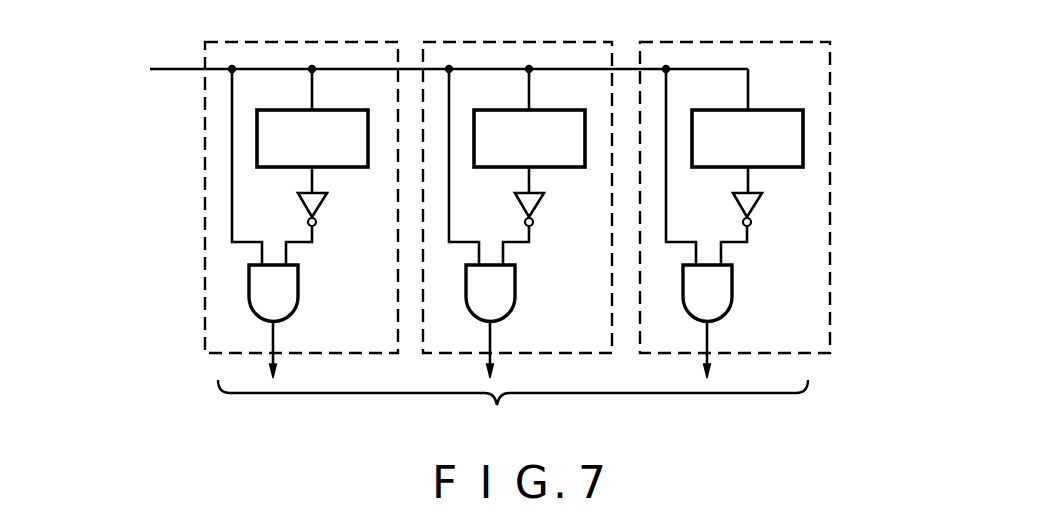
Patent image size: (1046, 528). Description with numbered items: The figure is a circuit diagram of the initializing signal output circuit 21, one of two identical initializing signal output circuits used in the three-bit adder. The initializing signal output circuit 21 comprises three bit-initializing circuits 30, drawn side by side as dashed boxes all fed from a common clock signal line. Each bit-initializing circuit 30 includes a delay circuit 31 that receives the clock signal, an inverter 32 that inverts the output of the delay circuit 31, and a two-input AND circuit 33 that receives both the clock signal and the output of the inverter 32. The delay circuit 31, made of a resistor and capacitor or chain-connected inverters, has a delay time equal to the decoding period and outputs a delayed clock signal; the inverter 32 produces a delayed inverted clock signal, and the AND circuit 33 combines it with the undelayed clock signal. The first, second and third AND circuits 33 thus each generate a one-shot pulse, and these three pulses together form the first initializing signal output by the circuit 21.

The initializing signal output circuit 21 is at (640, 28).
The bit-initializing circuit 30 is at (243, 38).
The delay circuit 31 is at (349, 110).
The inverter 32 is at (300, 205).
The two-input AND circuit 33 is at (299, 292).